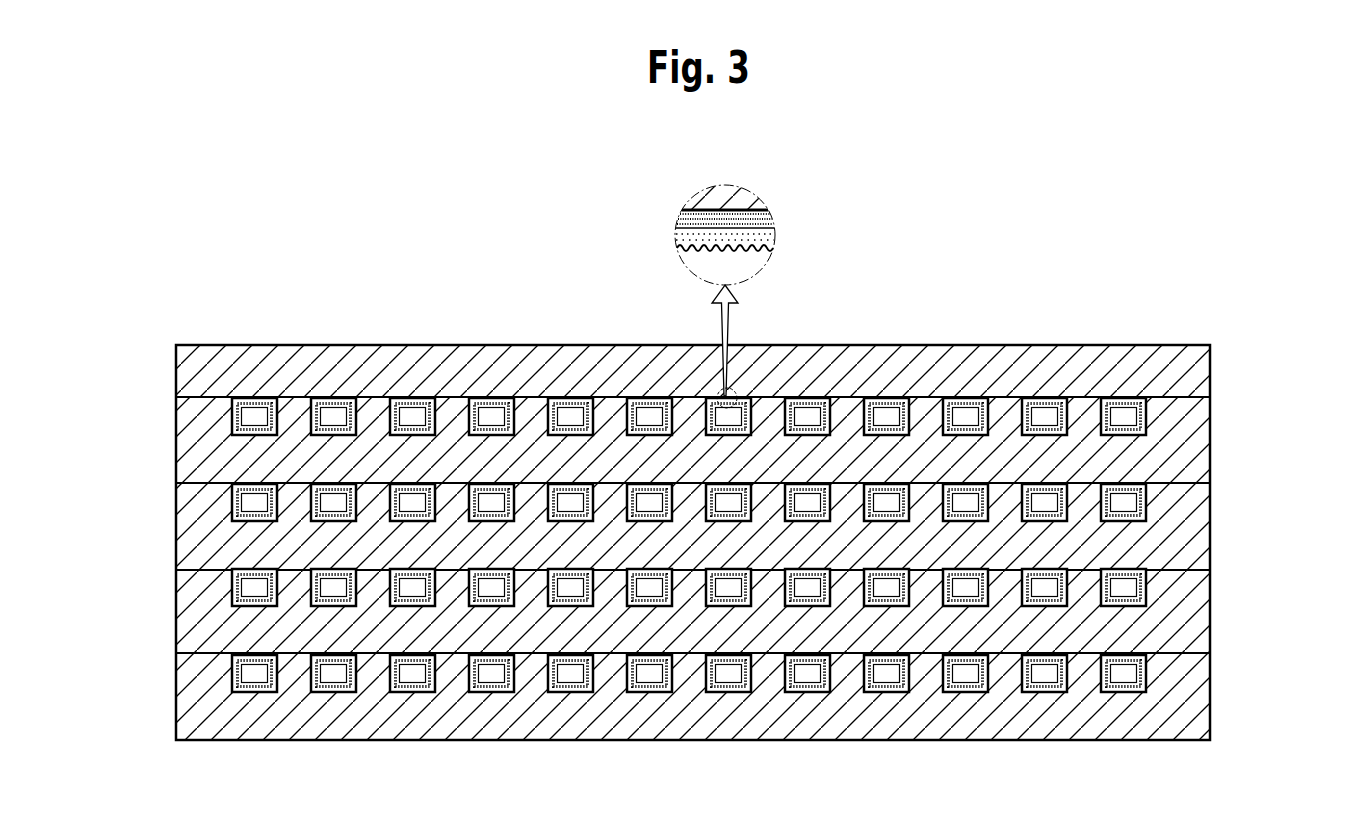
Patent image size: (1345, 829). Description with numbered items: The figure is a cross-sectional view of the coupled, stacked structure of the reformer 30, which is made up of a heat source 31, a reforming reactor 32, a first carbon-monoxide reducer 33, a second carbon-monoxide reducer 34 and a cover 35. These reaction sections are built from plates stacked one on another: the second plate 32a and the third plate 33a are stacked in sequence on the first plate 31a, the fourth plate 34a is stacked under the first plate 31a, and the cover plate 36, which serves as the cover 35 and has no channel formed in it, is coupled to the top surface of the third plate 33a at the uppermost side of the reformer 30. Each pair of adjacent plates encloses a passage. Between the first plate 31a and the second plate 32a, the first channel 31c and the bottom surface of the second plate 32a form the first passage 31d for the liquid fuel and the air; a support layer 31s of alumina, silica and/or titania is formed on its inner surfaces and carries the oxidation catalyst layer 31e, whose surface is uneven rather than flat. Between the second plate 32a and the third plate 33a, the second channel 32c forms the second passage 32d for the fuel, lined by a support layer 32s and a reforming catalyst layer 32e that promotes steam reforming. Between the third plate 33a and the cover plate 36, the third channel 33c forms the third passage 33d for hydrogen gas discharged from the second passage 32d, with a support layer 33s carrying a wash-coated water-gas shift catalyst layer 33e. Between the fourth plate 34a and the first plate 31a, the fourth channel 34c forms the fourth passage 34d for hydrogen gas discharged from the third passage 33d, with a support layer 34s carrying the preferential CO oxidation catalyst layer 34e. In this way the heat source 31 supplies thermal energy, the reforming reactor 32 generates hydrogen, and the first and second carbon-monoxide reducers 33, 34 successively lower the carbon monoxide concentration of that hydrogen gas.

The reformer 30 is at (1240, 294).
The heat source 31 is at (692, 498).
The reforming reactor 32 is at (692, 626).
The first carbon-monoxide reducer 33 is at (692, 585).
The second carbon-monoxide reducer 34 is at (692, 713).
The cover 35 is at (1249, 366).
The cover plate 36 is at (742, 197).
The first plate 31a is at (168, 618).
The first channel 31c is at (581, 498).
The first passage 31d is at (727, 603).
The oxidation catalyst layer 31e is at (581, 411).
The support layer 31s is at (232, 598).
The second plate 32a is at (168, 532).
The second channel 32c is at (230, 626).
The second passage 32d is at (649, 518).
The reforming catalyst layer 32e is at (230, 496).
The support layer 32s is at (232, 513).
The third plate 33a is at (168, 447).
The third channel 33c is at (191, 585).
The third passage 33d is at (571, 432).
The water-gas shift catalyst layer 33e is at (191, 414).
The support layer 33s is at (232, 427).
The fourth plate 34a is at (168, 702).
The fourth channel 34c is at (309, 713).
The fourth passage 34d is at (806, 690).
The preferential CO oxidation catalyst layer 34e is at (309, 669).
The support layer 34s is at (232, 684).